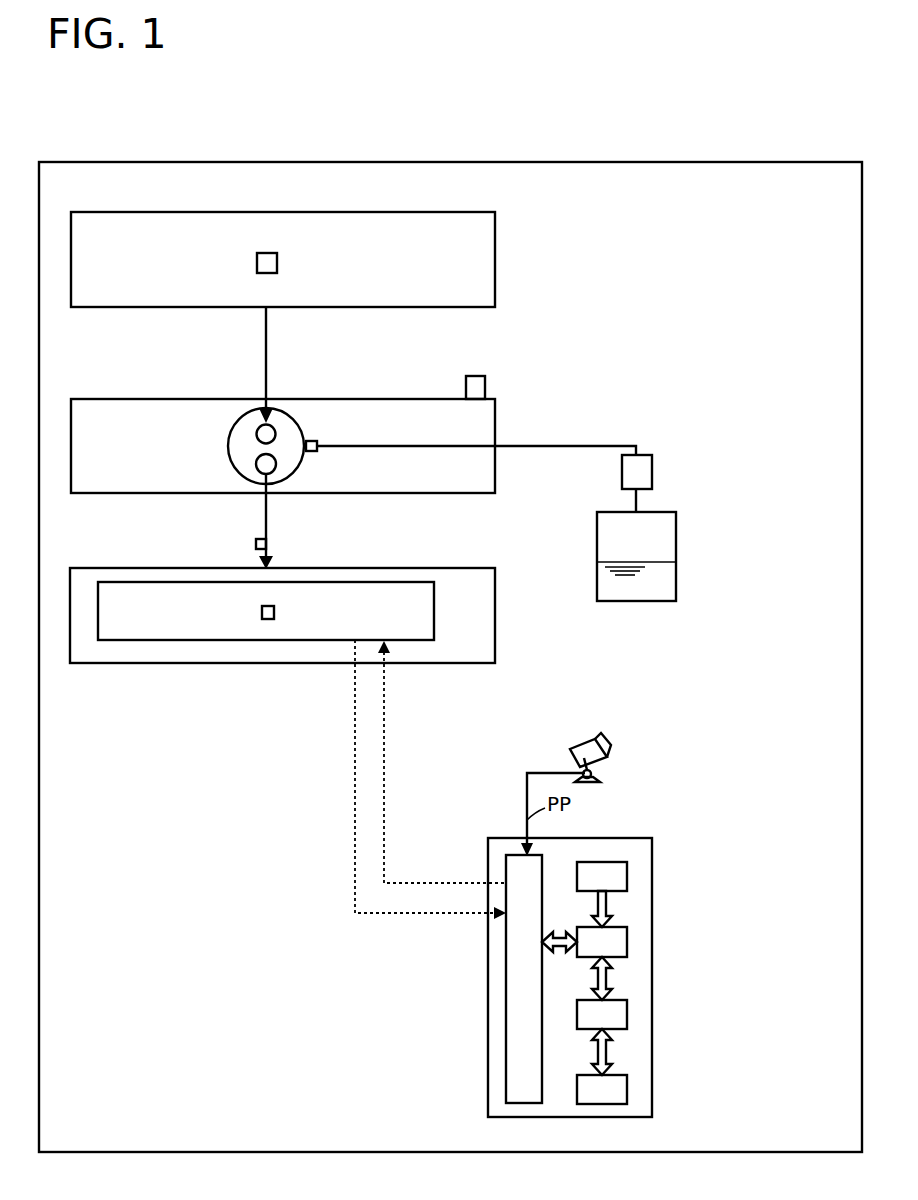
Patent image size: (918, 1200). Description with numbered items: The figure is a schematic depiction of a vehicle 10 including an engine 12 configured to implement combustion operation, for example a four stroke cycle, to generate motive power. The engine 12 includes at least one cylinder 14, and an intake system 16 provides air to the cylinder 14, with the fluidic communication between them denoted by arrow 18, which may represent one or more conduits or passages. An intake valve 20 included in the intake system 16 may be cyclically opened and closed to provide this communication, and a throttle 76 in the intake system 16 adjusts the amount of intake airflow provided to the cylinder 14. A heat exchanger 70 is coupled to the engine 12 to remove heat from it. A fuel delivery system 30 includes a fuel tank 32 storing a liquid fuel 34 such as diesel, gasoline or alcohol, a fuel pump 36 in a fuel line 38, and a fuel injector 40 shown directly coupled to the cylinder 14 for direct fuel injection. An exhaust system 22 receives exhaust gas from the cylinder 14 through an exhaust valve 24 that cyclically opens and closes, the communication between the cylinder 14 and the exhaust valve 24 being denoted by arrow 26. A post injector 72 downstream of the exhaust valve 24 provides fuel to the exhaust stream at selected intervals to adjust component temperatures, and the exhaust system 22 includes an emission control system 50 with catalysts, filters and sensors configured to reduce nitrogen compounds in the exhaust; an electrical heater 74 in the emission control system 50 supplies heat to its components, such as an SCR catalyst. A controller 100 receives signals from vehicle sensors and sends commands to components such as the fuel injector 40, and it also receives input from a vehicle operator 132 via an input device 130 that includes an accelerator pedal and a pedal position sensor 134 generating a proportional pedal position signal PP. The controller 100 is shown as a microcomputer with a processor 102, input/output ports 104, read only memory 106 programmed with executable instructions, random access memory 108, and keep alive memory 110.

The vehicle 10 is at (50, 162).
The intake system 16 is at (82, 212).
The throttle 76 is at (268, 253).
The arrow 18 is at (268, 355).
The heat exchanger 70 is at (478, 376).
The engine 12 is at (82, 399).
The cylinder 14 is at (240, 420).
The intake valve 20 is at (257, 436).
The exhaust valve 24 is at (276, 463).
The fuel injector 40 is at (317, 441).
The fuel line 38 is at (593, 446).
The fuel pump 36 is at (652, 470).
The fuel tank 32 is at (597, 548).
The liquid fuel 34 is at (605, 584).
The fuel delivery system 30 is at (726, 550).
The arrow 26 is at (268, 523).
The post injector 72 is at (256, 544).
The exhaust system 22 is at (78, 568).
The emission control system 50 is at (103, 640).
The electrical heater 74 is at (274, 612).
The input device 130 is at (572, 753).
The vehicle operator 132 is at (612, 746).
The pedal position sensor 134 is at (600, 781).
The controller 100 is at (645, 838).
The input/output ports 104 is at (543, 862).
The read only memory 106 is at (627, 873).
The processor 102 is at (627, 938).
The random access memory 108 is at (627, 1012).
The keep alive memory 110 is at (627, 1087).